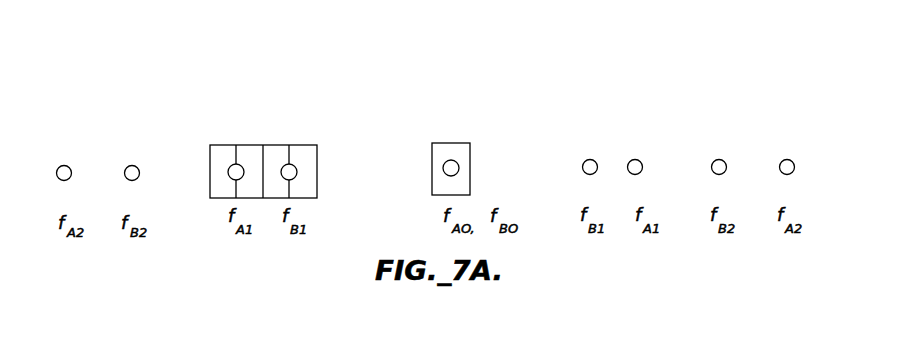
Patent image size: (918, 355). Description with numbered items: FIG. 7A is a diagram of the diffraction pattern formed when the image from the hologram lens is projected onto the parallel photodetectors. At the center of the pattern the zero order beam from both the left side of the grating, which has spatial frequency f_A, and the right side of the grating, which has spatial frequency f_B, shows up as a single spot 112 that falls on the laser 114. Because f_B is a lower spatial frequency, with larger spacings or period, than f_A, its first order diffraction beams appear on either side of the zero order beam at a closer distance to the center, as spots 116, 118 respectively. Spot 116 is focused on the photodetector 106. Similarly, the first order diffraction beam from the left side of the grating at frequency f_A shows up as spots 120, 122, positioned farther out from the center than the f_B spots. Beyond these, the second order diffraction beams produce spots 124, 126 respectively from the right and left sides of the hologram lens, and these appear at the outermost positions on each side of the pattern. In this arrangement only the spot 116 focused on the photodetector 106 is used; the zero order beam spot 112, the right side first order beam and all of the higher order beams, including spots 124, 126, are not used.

The photodetector 106 is at (319, 160).
The spot 112 is at (459, 168).
The laser 114 is at (455, 143).
The spot 116 is at (291, 164).
The spot 118 is at (589, 159).
The spot 120 is at (238, 164).
The spot 122 is at (634, 159).
The spot 124 is at (131, 165).
The spot 126 is at (63, 165).